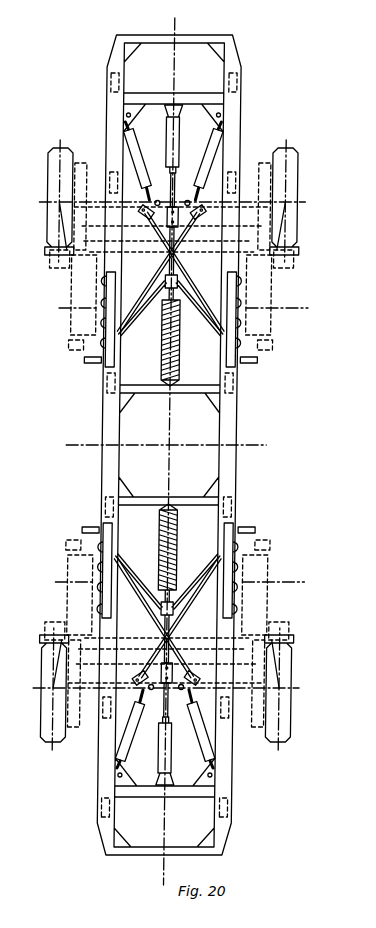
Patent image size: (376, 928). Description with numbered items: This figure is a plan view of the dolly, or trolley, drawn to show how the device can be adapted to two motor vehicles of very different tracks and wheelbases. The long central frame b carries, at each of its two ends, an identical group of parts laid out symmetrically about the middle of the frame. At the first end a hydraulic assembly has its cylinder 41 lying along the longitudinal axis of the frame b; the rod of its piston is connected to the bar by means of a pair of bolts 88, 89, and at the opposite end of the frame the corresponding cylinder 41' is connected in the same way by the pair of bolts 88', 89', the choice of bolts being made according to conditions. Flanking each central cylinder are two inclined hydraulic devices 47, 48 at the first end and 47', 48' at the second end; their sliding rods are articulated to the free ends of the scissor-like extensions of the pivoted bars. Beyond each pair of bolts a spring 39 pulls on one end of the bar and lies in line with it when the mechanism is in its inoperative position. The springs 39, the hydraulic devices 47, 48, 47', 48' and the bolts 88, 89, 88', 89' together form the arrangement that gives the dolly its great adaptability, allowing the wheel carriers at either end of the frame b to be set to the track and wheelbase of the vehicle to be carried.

The vehicle frame b is at (237, 422).
The cylinder 41 is at (185, 137).
The hydraulic device 47 is at (110, 156).
The hydraulic device 48 is at (236, 155).
The bolt 88 is at (172, 193).
The bolt 89 is at (170, 272).
The spring 39 is at (162, 358).
The cylinder 41' is at (175, 758).
The hydraulic device 47' is at (100, 733).
The hydraulic device 48' is at (231, 733).
The bolt 88' is at (166, 693).
The bolt 89' is at (167, 617).